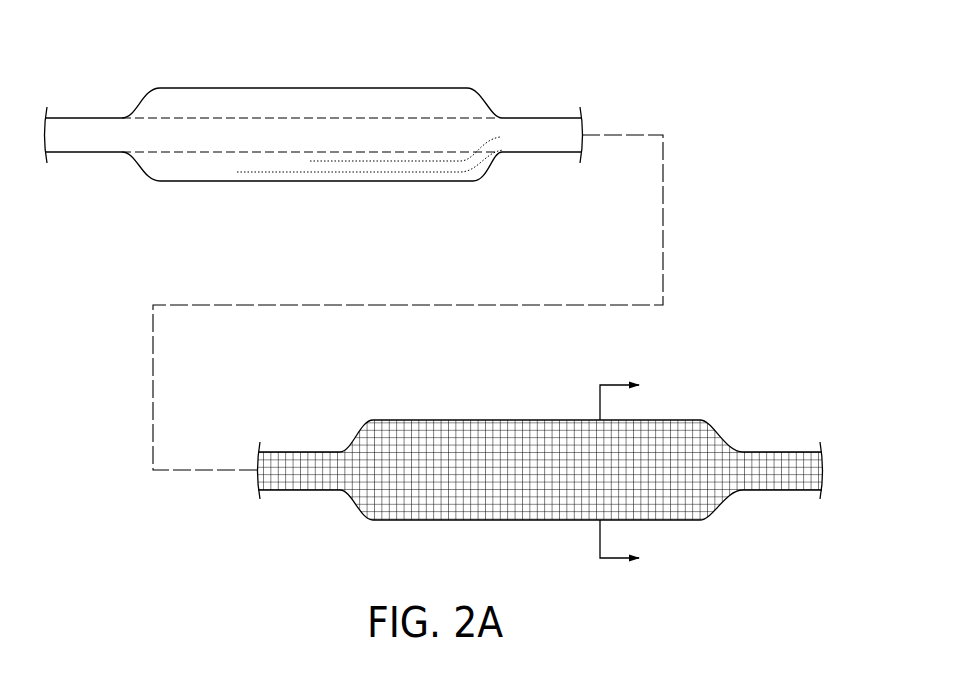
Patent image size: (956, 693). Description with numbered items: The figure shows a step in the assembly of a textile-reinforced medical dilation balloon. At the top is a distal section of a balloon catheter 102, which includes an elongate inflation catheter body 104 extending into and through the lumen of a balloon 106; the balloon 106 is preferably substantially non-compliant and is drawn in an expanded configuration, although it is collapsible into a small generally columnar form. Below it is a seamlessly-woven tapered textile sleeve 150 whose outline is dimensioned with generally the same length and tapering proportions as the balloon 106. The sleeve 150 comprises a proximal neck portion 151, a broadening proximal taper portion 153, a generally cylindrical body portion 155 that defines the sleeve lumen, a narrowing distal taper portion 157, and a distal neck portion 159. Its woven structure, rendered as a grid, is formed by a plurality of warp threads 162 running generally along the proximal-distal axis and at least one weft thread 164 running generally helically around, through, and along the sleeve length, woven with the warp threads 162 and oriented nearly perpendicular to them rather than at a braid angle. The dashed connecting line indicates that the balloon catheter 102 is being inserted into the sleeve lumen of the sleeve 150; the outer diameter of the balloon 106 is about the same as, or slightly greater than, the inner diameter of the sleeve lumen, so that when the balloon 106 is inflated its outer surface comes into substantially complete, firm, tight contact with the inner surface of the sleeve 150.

The balloon catheter 102 is at (314, 148).
The inflation catheter body 104 is at (80, 130).
The balloon 106 is at (258, 87).
The textile sleeve 150 is at (524, 477).
The proximal neck portion 151 is at (303, 496).
The proximal taper portion 153 is at (347, 429).
The body portion 155 is at (519, 411).
The distal taper portion 157 is at (729, 429).
The distal neck portion 159 is at (789, 504).
The warp threads 162 is at (313, 450).
The weft thread 164 is at (390, 503).